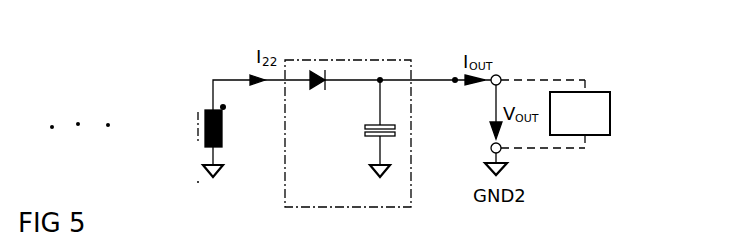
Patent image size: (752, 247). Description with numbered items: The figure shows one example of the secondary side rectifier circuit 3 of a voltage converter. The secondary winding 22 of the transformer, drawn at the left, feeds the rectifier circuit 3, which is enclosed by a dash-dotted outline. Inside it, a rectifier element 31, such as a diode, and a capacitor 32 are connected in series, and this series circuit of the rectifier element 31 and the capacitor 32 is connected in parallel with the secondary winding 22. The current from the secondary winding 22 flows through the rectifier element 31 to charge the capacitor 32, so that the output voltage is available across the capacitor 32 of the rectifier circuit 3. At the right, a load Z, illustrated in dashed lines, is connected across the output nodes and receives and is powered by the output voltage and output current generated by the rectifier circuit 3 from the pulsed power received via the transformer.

The secondary winding 22 is at (222, 140).
The rectifier circuit 3 is at (355, 59).
The rectifier element 31 is at (321, 95).
The capacitor 32 is at (367, 127).
The load Z is at (610, 118).